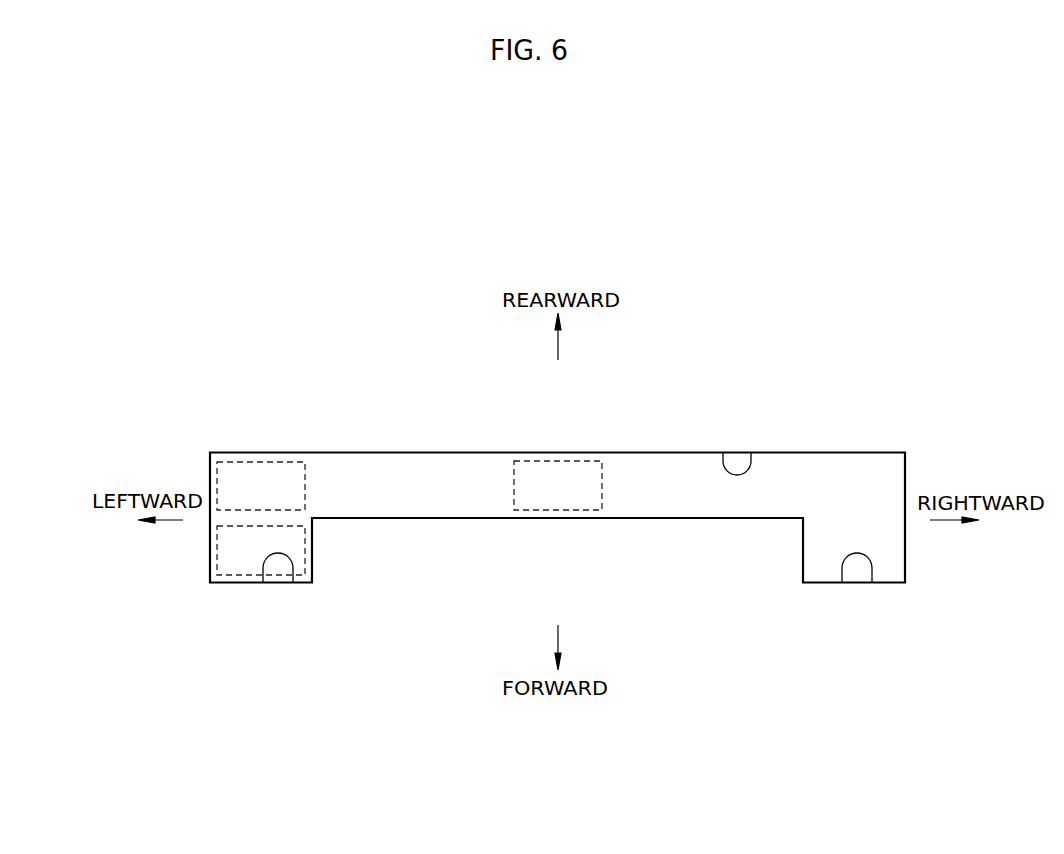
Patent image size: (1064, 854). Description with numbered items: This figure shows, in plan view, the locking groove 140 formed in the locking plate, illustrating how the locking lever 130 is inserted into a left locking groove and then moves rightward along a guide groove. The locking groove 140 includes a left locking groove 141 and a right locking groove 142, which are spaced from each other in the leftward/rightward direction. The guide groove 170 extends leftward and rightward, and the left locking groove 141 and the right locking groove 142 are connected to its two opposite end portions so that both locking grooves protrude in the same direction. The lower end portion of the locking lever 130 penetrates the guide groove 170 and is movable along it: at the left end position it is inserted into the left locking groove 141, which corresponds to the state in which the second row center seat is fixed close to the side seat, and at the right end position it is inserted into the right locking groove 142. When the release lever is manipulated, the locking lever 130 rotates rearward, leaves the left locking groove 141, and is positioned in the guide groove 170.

The locking lever 130 is at (269, 458).
The locking groove 140 is at (576, 629).
The left locking groove 141 is at (294, 576).
The right locking groove 142 is at (872, 574).
The guide groove 170 is at (723, 452).